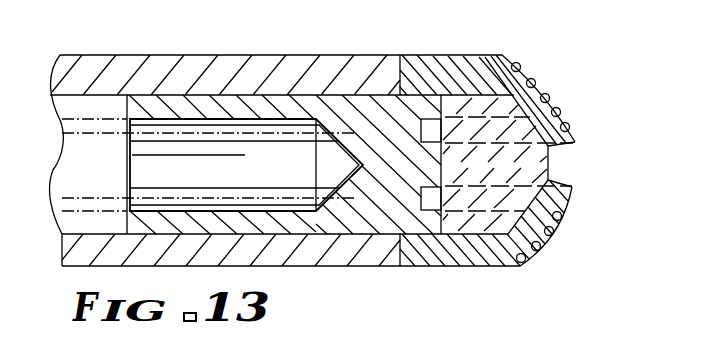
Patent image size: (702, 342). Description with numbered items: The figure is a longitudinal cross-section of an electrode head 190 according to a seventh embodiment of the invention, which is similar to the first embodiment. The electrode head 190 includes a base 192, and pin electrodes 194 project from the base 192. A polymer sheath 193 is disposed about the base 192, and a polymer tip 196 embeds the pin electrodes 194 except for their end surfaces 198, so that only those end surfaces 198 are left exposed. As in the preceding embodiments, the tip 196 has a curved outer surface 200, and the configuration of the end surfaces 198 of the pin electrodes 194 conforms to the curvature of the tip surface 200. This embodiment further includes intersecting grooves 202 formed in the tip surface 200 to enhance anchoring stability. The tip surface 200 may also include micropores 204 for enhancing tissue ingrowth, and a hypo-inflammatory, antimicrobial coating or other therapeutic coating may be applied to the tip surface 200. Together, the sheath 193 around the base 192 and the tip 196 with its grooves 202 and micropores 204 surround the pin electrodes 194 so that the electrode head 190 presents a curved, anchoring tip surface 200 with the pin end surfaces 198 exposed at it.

The electrode head 190 is at (214, 38).
The base 192 is at (421, 92).
The polymer sheath 193 is at (132, 55).
The pin electrodes 194 is at (462, 108).
The polymer tip 196 is at (543, 100).
The end surfaces 198 is at (566, 132).
The curved outer surface 200 is at (561, 233).
The intersecting grooves 202 is at (566, 173).
The micropores 204 is at (540, 73).